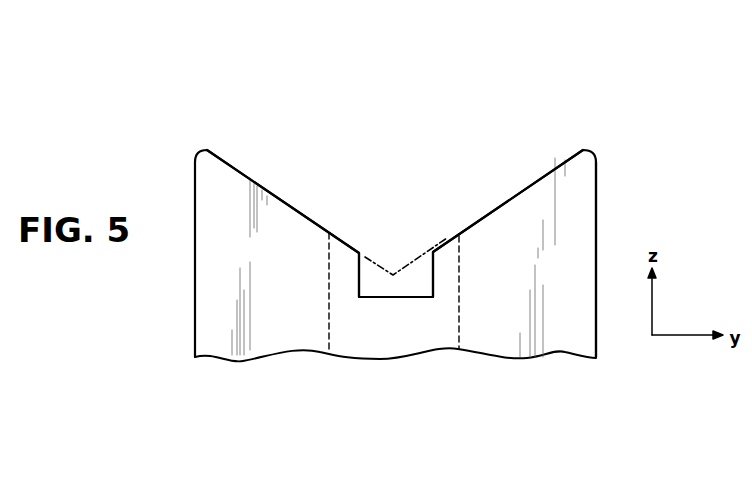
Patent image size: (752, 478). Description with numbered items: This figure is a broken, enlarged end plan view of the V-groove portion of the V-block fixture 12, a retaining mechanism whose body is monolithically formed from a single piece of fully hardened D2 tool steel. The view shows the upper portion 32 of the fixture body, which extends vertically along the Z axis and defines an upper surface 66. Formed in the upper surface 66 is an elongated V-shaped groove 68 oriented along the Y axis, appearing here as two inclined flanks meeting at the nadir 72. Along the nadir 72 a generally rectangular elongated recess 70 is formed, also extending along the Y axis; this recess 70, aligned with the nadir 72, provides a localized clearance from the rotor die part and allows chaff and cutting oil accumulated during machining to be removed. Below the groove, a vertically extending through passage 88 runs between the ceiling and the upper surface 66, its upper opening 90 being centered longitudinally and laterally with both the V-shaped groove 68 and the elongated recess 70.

The V-block fixture 12 is at (140, 131).
The upper portion 32 is at (573, 203).
The upper surface 66 is at (208, 149).
The V-shaped groove 68 is at (507, 198).
The rectangular elongated recess 70 is at (364, 257).
The nadir 72 is at (393, 273).
The vertically extending through passage 88 is at (330, 315).
The upper opening 90 is at (460, 250).